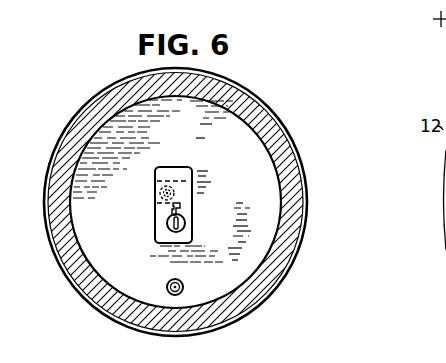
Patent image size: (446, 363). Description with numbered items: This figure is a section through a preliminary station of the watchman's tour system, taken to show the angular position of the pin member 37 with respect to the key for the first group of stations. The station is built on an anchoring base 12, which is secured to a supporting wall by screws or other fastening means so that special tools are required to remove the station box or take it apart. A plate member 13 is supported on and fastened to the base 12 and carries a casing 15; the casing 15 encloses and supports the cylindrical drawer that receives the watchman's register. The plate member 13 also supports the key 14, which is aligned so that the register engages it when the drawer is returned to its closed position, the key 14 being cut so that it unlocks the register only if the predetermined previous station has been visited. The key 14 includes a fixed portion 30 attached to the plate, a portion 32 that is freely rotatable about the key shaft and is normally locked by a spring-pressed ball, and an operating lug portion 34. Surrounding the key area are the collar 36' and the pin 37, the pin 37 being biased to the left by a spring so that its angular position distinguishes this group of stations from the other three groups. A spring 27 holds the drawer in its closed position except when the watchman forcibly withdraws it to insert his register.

The anchoring base 12 is at (67, 126).
The plate member 13 is at (223, 202).
The key 14 is at (192, 213).
The casing 15 is at (238, 103).
The spring 27 is at (183, 285).
The fixed portion 30 is at (180, 208).
The freely rotatable portion 32 is at (183, 228).
The operating lug portion 34 is at (167, 225).
The collar 36' is at (153, 188).
The pin member 37 is at (163, 196).